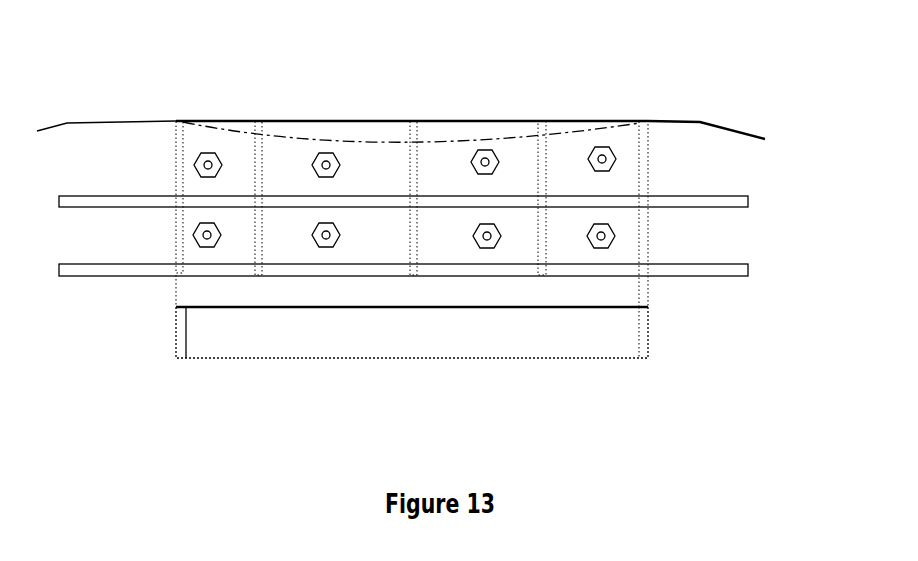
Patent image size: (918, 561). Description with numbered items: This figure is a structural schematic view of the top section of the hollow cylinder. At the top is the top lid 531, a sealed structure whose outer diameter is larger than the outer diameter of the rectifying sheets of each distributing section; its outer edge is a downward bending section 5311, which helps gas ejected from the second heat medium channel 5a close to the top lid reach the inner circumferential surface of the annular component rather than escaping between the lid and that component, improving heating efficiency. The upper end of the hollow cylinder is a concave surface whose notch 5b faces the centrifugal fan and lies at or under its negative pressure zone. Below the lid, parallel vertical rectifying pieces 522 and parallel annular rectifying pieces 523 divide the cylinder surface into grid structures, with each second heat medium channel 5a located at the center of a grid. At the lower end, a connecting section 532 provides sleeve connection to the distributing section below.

The top lid 531 is at (332, 120).
The bending section 5311 is at (67, 123).
The notch 5b is at (430, 132).
The vertical rectifying piece 522 is at (543, 170).
The second heat medium channel 5a is at (482, 167).
The annular rectifying piece 523 is at (762, 195).
The connecting section 532 is at (363, 357).